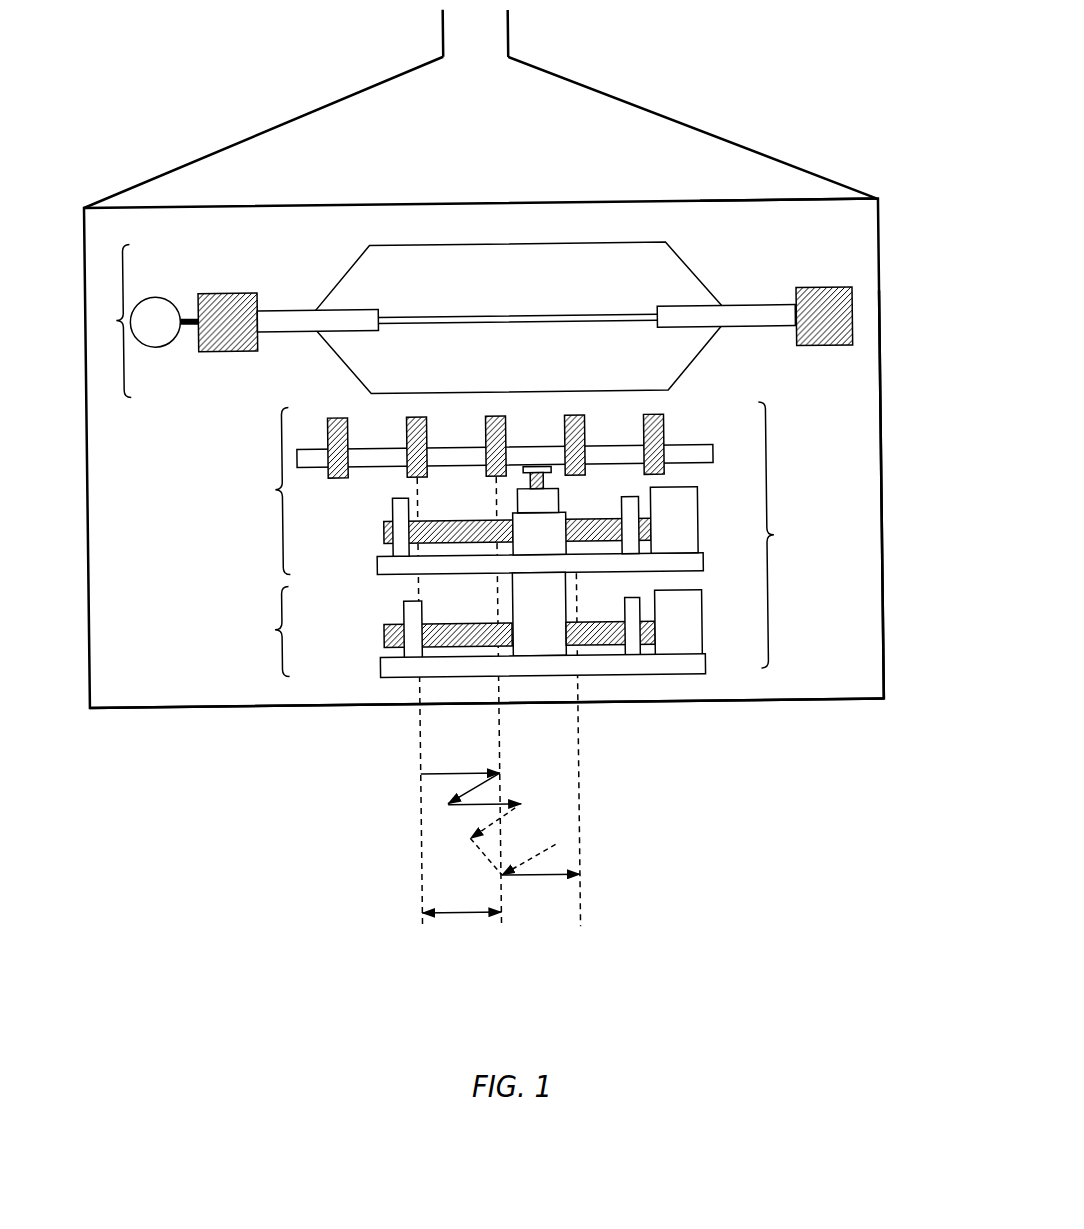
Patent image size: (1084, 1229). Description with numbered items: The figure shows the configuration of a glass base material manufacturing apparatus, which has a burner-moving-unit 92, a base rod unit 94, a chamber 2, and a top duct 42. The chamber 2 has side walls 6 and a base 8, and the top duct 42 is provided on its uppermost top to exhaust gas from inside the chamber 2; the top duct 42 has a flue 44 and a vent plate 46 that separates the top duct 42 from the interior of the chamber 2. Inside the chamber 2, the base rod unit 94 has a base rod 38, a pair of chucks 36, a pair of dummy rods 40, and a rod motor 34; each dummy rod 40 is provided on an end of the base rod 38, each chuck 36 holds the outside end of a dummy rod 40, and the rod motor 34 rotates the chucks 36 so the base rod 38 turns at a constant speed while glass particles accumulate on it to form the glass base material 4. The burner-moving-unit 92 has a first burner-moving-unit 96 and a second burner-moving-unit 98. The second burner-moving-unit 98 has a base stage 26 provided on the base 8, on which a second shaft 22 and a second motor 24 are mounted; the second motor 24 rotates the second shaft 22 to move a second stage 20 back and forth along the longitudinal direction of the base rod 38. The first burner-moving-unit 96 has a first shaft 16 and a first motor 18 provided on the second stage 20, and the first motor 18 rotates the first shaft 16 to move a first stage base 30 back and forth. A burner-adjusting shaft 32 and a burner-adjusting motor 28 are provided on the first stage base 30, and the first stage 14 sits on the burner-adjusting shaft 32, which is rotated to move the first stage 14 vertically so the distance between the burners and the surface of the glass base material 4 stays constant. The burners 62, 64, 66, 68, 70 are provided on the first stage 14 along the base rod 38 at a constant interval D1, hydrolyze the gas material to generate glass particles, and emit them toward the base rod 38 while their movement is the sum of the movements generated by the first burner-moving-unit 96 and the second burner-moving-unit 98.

The chamber 2 is at (881, 394).
The glass base material 4 is at (383, 253).
The side walls 6 is at (878, 595).
The base 8 is at (784, 707).
The first stage 14 is at (710, 460).
The first shaft 16 is at (577, 529).
The first motor 18 is at (697, 517).
The second stage 20 is at (701, 571).
The second shaft 22 is at (435, 629).
The second motor 24 is at (698, 618).
The base stage 26 is at (700, 672).
The burner-adjusting motor 28 is at (514, 508).
The first stage base 30 is at (562, 526).
The burner-adjusting shaft 32 is at (525, 486).
The rod motor 34 is at (159, 307).
The chucks 36 is at (227, 295).
The base rod 38 is at (639, 319).
The dummy rods 40 is at (279, 315).
The top duct 42 is at (684, 128).
The flue 44 is at (542, 83).
The vent plate 46 is at (816, 207).
The burner 62 is at (347, 446).
The burner 64 is at (427, 446).
The burner 66 is at (505, 444).
The burner 68 is at (585, 445).
The burner 70 is at (663, 443).
The burner-moving-unit 92 is at (781, 534).
The base rod unit 94 is at (110, 320).
The first burner-moving-unit 96 is at (267, 492).
The second burner-moving-unit 98 is at (267, 632).
The constant interval D1 is at (455, 919).